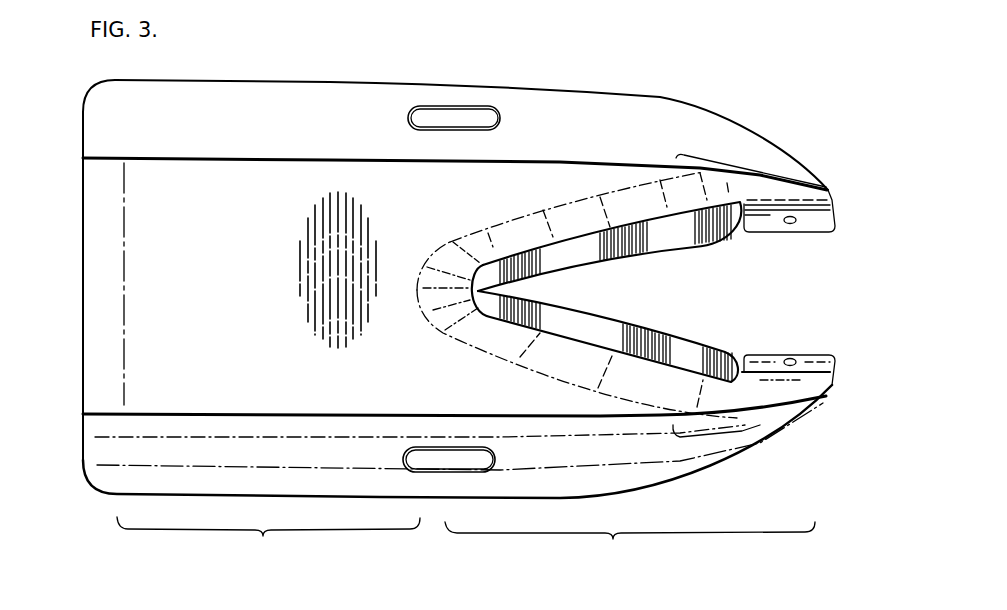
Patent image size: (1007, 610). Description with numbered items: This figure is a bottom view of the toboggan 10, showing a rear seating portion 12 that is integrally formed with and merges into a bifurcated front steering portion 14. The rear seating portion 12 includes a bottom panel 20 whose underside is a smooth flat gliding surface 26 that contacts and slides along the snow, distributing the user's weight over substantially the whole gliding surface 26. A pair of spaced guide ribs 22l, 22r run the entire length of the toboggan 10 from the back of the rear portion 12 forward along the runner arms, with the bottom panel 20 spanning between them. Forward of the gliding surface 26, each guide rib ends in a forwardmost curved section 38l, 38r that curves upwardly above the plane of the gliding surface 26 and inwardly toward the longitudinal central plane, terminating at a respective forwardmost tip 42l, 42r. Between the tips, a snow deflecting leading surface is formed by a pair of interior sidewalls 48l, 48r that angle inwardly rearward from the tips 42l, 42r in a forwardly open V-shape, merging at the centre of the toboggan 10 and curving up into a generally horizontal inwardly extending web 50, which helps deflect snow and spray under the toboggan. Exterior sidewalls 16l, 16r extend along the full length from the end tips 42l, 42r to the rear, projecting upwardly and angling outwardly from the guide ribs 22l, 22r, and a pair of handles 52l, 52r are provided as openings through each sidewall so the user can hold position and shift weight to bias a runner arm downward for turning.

The toboggan 10 is at (66, 305).
The rear seating portion 12 is at (268, 542).
The front steering portion 14 is at (630, 545).
The right exterior sidewall 16r is at (273, 103).
The left exterior sidewall 16l is at (82, 455).
The bottom panel 20 is at (267, 310).
The right guide rib 22r is at (172, 155).
The left guide rib 22l is at (248, 410).
The gliding surface 26 is at (365, 183).
The right forwardmost curved section 38r is at (750, 163).
The left forwardmost curved section 38l is at (765, 445).
The right forwardmost tip 42r is at (830, 190).
The left forwardmost tip 42l is at (826, 397).
The right interior sidewall 48r is at (578, 213).
The left interior sidewall 48l is at (483, 333).
The web 50 is at (683, 345).
The right handle 52r is at (445, 112).
The left handle 52l is at (410, 462).